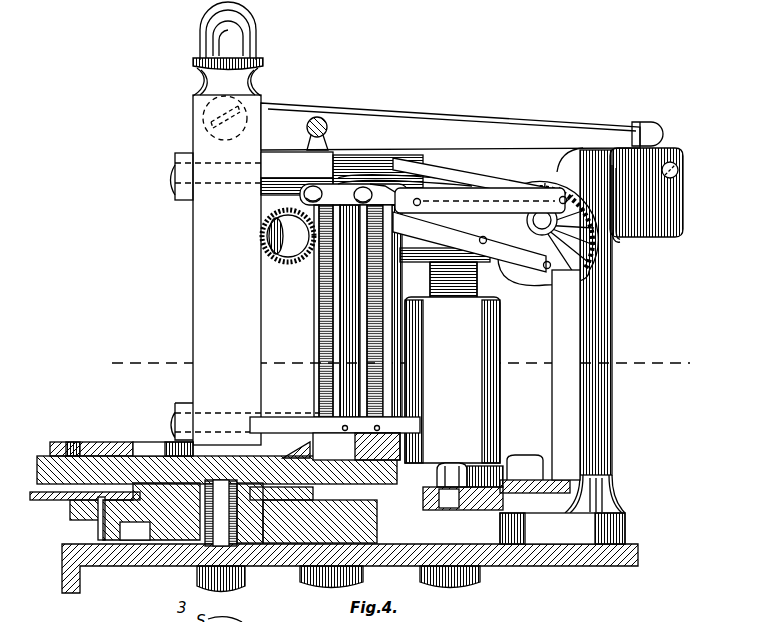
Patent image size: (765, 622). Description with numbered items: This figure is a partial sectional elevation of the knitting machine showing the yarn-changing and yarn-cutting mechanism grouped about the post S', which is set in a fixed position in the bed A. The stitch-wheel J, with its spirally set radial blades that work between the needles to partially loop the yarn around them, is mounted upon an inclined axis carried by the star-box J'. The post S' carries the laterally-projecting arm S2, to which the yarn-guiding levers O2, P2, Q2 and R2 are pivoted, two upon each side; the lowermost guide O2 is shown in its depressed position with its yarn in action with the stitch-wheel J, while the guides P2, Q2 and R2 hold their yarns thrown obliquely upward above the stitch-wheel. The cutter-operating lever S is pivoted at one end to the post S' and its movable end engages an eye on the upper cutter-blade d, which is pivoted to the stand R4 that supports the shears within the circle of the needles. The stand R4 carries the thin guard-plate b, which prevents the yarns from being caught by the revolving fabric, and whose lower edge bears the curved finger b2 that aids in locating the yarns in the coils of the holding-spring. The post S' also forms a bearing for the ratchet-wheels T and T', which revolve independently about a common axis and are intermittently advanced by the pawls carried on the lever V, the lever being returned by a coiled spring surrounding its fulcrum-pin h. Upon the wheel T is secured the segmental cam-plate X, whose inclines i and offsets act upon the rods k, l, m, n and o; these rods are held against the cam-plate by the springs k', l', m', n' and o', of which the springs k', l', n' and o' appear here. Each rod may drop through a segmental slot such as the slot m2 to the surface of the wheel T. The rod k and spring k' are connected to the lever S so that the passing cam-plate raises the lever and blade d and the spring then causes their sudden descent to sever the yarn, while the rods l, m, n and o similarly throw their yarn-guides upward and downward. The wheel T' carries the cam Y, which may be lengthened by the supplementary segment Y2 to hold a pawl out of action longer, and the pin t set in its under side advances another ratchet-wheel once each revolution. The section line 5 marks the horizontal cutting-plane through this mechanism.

The section line 5 5 is at (396, 367).
The bed A is at (36, 588).
The post S' is at (246, 223).
The cutter-operating lever S is at (462, 126).
The spring k' is at (356, 133).
The laterally-projecting arm S2 is at (342, 178).
The yarn-guiding lever Q2 is at (406, 182).
The stitch-wheel J is at (430, 233).
The rod k is at (306, 311).
The spring l' is at (313, 311).
The spring o' is at (316, 311).
The rod o is at (353, 311).
The spring n' is at (397, 311).
The rod n is at (403, 311).
The yarn-guiding lever P2 is at (479, 180).
The yarn-guiding lever R2 is at (481, 200).
The star-box J' is at (445, 264).
The yarn-guiding lever O2 is at (472, 242).
The upper cutter-blade d is at (562, 346).
The stand R4 is at (566, 375).
The guard-plate b is at (676, 204).
The curved finger b2 is at (612, 240).
The fulcrum-pin h is at (452, 463).
The lever V is at (463, 498).
The ratchet-wheel T is at (208, 467).
The segmental slot m2 is at (91, 438).
The segmental cam-plate X is at (148, 441).
The incline i is at (158, 445).
The cam Y is at (32, 494).
The supplementary segment Y2 is at (36, 506).
The pin t is at (94, 521).
The ratchet-wheel T' is at (240, 513).
The rod m is at (335, 426).
The rod l is at (356, 446).